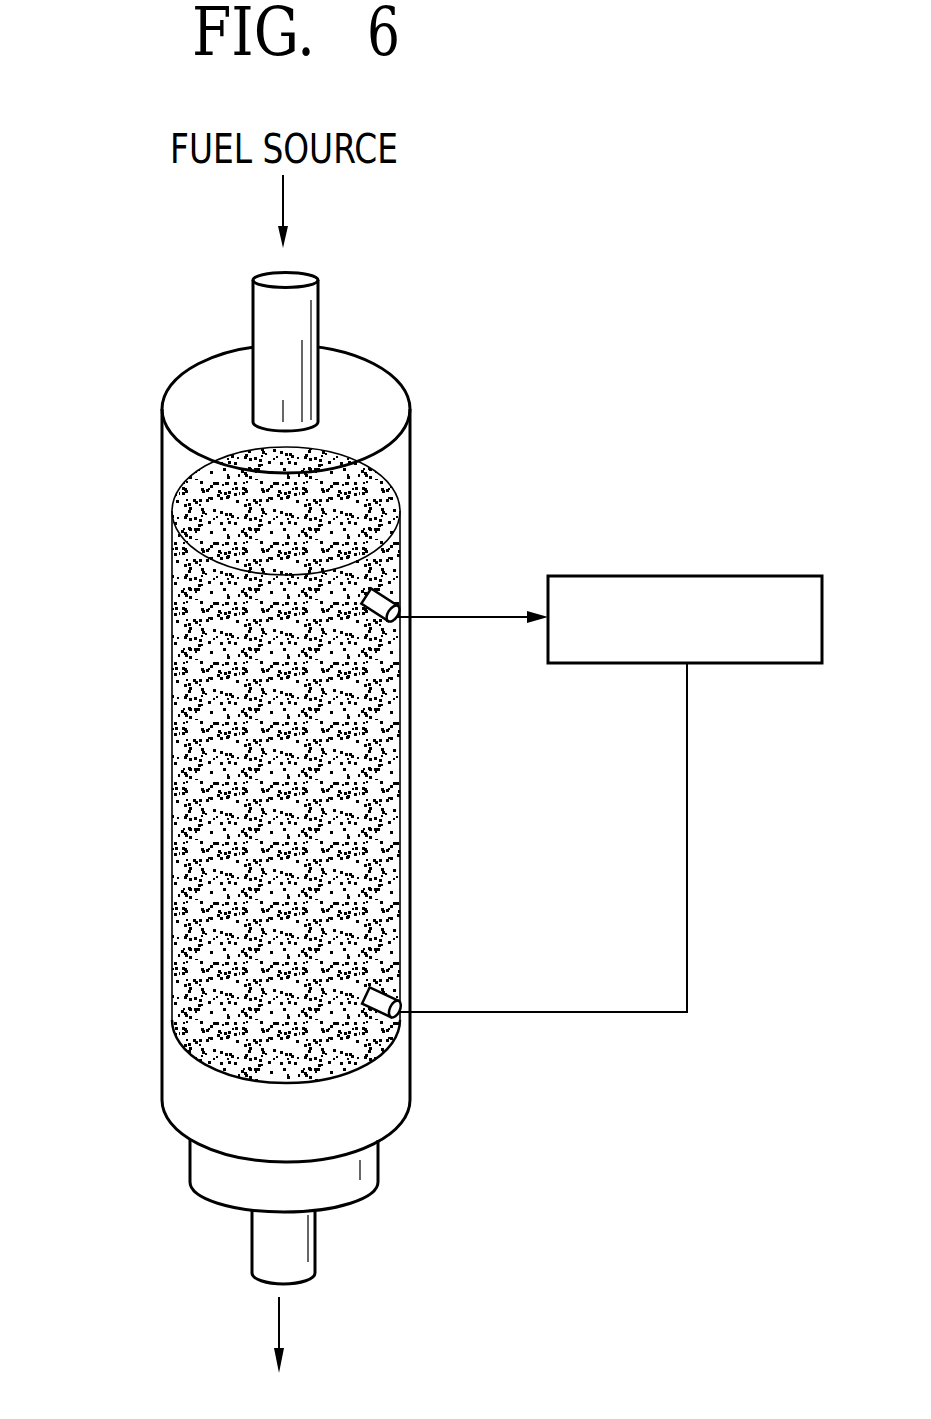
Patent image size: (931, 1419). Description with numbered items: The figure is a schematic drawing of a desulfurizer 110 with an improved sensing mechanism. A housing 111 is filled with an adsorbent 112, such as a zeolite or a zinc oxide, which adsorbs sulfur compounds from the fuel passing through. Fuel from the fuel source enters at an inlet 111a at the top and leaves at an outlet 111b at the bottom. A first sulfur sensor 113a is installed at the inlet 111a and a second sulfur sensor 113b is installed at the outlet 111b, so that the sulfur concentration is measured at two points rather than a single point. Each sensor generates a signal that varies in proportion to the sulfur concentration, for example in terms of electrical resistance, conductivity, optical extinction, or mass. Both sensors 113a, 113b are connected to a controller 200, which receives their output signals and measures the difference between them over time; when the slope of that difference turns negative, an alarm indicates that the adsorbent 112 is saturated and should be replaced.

The desulfurizer 110 is at (288, 768).
The housing 111 is at (407, 464).
The inlet 111a is at (313, 315).
The outlet 111b is at (313, 1253).
The adsorbent 112 is at (190, 730).
The first sulfur sensor 113a is at (407, 605).
The second sulfur sensor 113b is at (402, 1003).
The controller 200 is at (700, 576).